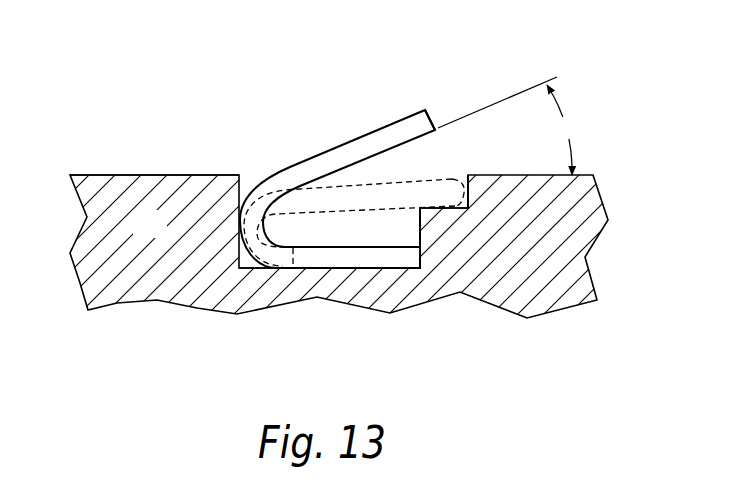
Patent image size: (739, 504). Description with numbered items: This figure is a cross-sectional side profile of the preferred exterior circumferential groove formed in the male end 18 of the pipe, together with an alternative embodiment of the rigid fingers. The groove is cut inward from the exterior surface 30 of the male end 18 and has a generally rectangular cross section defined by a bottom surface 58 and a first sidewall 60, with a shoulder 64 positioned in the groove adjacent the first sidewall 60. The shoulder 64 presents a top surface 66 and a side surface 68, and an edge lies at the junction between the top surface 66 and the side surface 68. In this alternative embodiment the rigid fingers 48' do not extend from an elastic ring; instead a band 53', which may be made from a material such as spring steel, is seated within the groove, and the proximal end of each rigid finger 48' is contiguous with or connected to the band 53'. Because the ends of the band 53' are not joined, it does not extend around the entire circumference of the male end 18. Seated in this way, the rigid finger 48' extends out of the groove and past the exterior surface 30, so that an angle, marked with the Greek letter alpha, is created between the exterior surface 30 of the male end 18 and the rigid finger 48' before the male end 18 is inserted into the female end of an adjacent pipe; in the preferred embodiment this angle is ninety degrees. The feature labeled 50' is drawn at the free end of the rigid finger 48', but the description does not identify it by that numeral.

The male end 18 is at (138, 235).
The exterior surface 30 is at (160, 175).
The rigid fingers 48' is at (337, 189).
The free end of clip arm 50' is at (467, 78).
The band 53' is at (352, 235).
The bottom surface 58 is at (348, 270).
The first sidewall 60 is at (470, 193).
The shoulder 64 is at (438, 235).
The top surface 66 is at (460, 200).
The side surface 68 is at (420, 225).